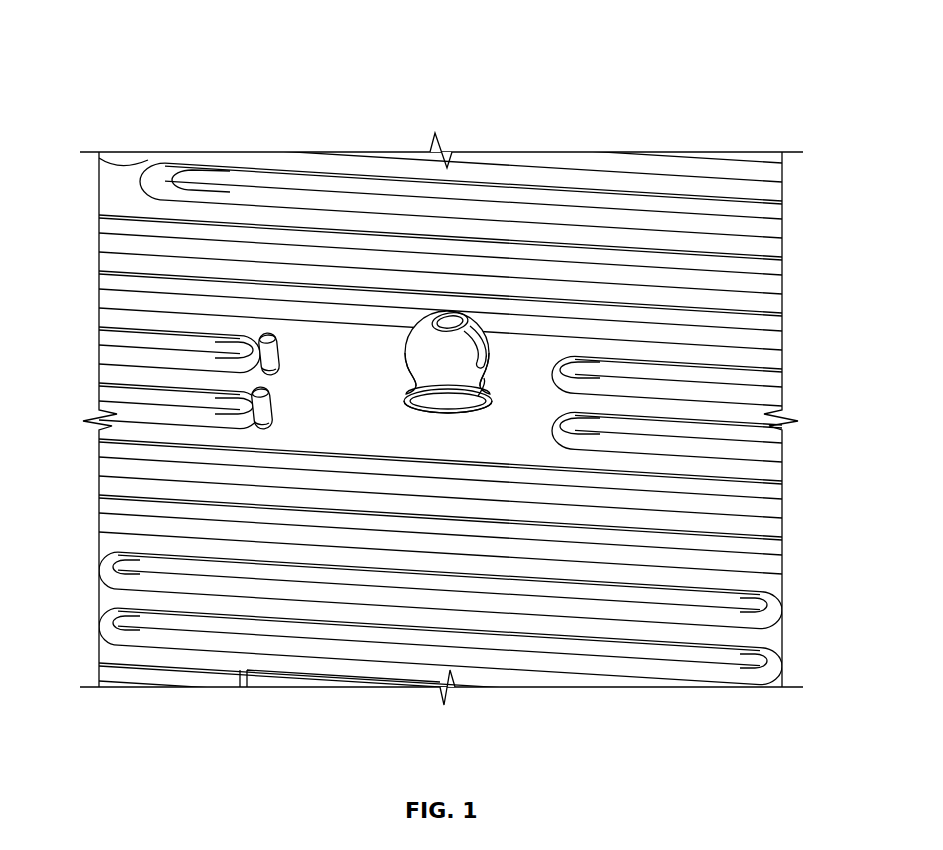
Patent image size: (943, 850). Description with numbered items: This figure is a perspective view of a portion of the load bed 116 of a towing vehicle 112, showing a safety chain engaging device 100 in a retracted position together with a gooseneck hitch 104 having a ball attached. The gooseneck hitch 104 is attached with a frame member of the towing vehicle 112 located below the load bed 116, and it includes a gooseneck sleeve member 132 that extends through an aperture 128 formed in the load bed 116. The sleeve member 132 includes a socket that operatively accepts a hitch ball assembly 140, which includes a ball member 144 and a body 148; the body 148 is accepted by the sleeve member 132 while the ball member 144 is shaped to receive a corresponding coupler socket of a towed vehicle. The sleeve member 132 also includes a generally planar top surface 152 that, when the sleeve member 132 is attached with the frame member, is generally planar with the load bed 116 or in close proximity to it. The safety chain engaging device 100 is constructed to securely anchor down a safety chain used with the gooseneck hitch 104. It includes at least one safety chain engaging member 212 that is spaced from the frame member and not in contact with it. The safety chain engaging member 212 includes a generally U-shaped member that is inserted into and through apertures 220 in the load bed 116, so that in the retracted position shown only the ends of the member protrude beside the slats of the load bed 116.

The safety chain engaging device 100 is at (115, 28).
The gooseneck hitch 104 is at (350, 376).
The towing vehicle 112 is at (735, 158).
The load bed 116 is at (460, 195).
The aperture 128 is at (425, 412).
The gooseneck sleeve member 132 is at (490, 398).
The hitch ball assembly 140 is at (446, 297).
The ball member 144 is at (482, 325).
The body 148 is at (412, 394).
The top surface 152 is at (476, 414).
The safety chain engaging member 212 is at (268, 333).
The apertures 220 is at (278, 370).